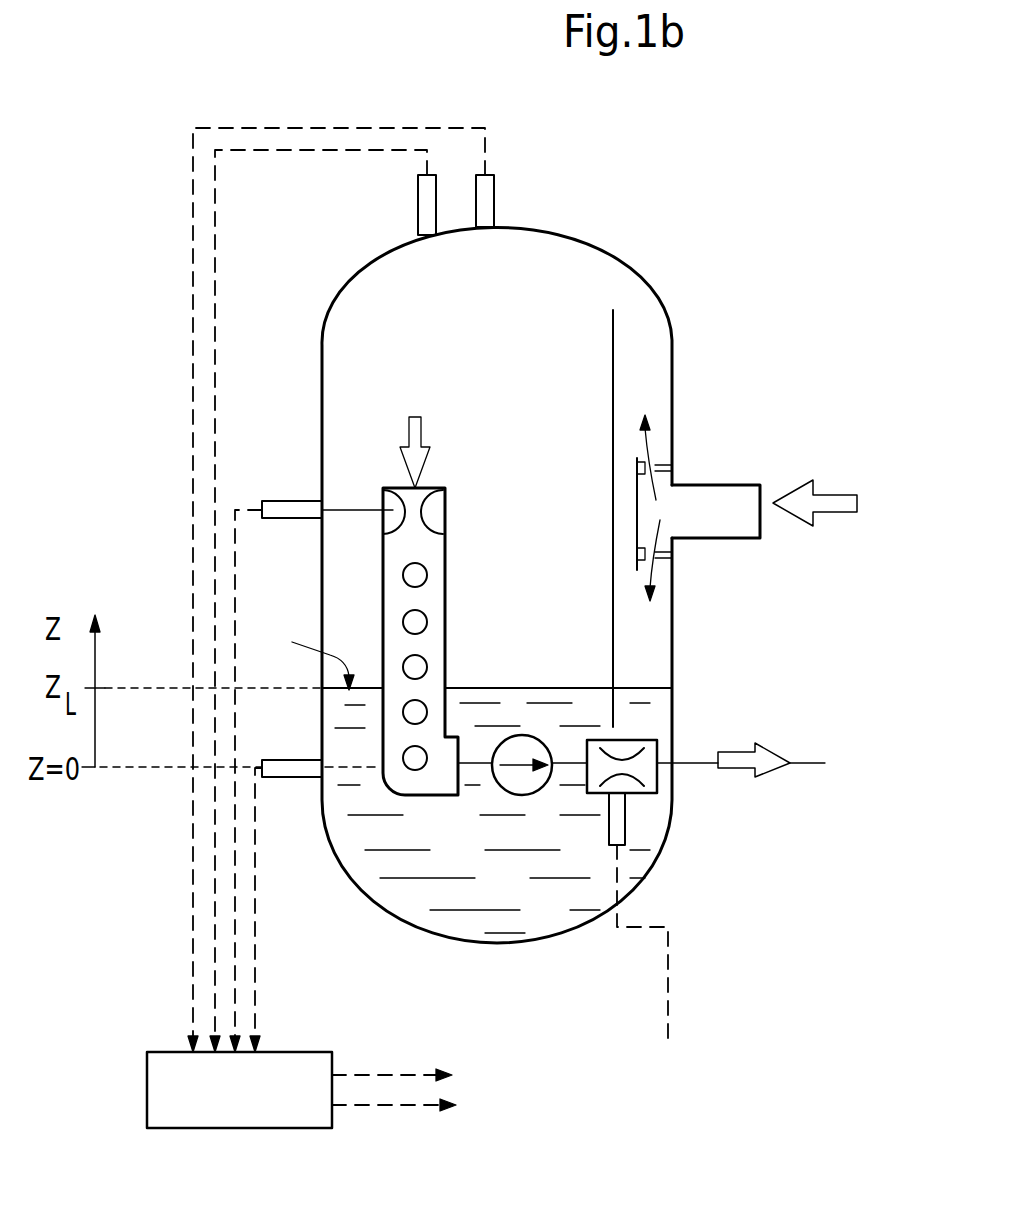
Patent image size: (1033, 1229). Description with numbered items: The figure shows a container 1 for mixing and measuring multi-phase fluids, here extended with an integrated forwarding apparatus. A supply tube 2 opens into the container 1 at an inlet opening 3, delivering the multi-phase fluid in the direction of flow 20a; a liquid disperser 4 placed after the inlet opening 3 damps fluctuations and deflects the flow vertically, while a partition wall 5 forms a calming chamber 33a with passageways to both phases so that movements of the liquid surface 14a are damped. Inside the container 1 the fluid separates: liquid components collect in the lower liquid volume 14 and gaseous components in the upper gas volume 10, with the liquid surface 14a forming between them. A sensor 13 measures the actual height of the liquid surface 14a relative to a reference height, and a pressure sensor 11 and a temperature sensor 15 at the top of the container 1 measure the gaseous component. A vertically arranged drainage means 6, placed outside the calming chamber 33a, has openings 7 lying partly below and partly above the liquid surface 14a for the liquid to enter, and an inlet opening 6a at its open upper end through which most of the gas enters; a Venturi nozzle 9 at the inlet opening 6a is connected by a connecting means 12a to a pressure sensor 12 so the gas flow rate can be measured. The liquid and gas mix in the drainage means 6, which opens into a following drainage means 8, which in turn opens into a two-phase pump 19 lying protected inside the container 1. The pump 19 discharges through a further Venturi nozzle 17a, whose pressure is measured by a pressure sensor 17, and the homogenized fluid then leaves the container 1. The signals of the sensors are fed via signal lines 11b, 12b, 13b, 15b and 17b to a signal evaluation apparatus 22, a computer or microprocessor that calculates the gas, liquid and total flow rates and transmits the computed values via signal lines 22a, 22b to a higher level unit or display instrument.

The container 1 is at (618, 258).
The supply tube 2 is at (743, 480).
The inlet opening 3 is at (672, 505).
The liquid disperser 4 is at (662, 466).
The partition wall 5 is at (613, 347).
The drainage means 6 is at (395, 737).
The inlet opening 6a is at (425, 512).
The openings 7 is at (415, 622).
The drainage means 8 is at (473, 770).
The Venturi nozzle 9 is at (408, 488).
The gas volume 10 is at (545, 280).
The pressure sensor 11 is at (427, 195).
The signal line 11b is at (285, 150).
The pressure sensor 12 is at (275, 508).
The connecting means 12a is at (337, 510).
The signal line 12b is at (235, 562).
The sensor 13 is at (284, 770).
The signal line 13b is at (256, 930).
The liquid volume 14 is at (560, 902).
The liquid surface 14a is at (297, 656).
The temperature sensor 15 is at (477, 193).
The signal line 15b is at (368, 128).
The pressure sensor 17 is at (620, 833).
The Venturi nozzle 17a is at (657, 783).
The signal line 17b is at (670, 974).
The two-phase pump 19 is at (522, 795).
The direction of flow 20a is at (652, 432).
The signal evaluation apparatus 22 is at (160, 1052).
The signal line 22a is at (388, 1078).
The signal line 22b is at (383, 1108).
The calming chamber 33a is at (643, 373).